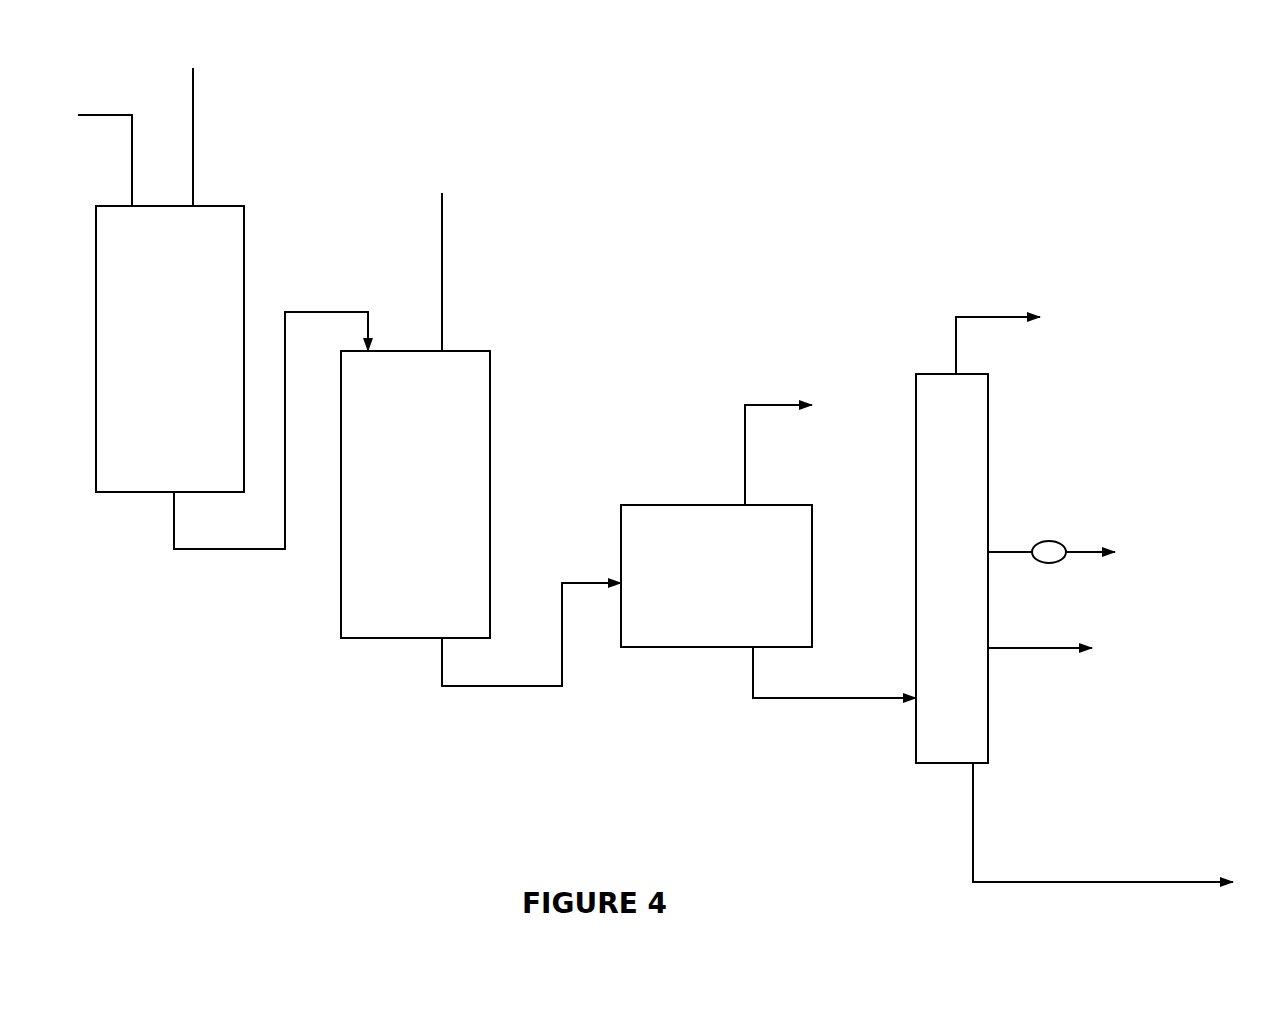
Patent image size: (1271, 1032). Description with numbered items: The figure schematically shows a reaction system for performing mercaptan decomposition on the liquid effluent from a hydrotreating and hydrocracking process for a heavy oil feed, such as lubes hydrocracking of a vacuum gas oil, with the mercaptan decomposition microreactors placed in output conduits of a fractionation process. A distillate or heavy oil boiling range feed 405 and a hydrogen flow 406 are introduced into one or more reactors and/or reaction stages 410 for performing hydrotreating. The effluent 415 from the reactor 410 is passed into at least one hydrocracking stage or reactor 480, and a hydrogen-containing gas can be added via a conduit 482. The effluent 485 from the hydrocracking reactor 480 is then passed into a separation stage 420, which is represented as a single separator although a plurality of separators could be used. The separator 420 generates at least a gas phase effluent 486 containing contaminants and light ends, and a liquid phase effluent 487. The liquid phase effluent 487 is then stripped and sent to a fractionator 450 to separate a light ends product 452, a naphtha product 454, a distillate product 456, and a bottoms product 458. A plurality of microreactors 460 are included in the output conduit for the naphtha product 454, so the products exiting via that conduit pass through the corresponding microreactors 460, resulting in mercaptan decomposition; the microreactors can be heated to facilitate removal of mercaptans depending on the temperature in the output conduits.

The distillate or heavy oil boiling range feed 405 is at (95, 102).
The hydrogen flow 406 is at (210, 143).
The reactor 410 is at (205, 277).
The effluent 415 is at (210, 572).
The hydrocracking reactor 480 is at (473, 426).
The conduit 482 is at (466, 275).
The effluent 485 is at (455, 715).
The separation stage 420 is at (712, 525).
The gas phase effluent 486 is at (772, 377).
The liquid phase effluent 487 is at (760, 716).
The fractionator 450 is at (962, 478).
The light ends product 452 is at (1007, 291).
The naphtha product 454 is at (1090, 533).
The microreactors 460 is at (1057, 527).
The distillate product 456 is at (1107, 679).
The bottoms product 458 is at (957, 816).